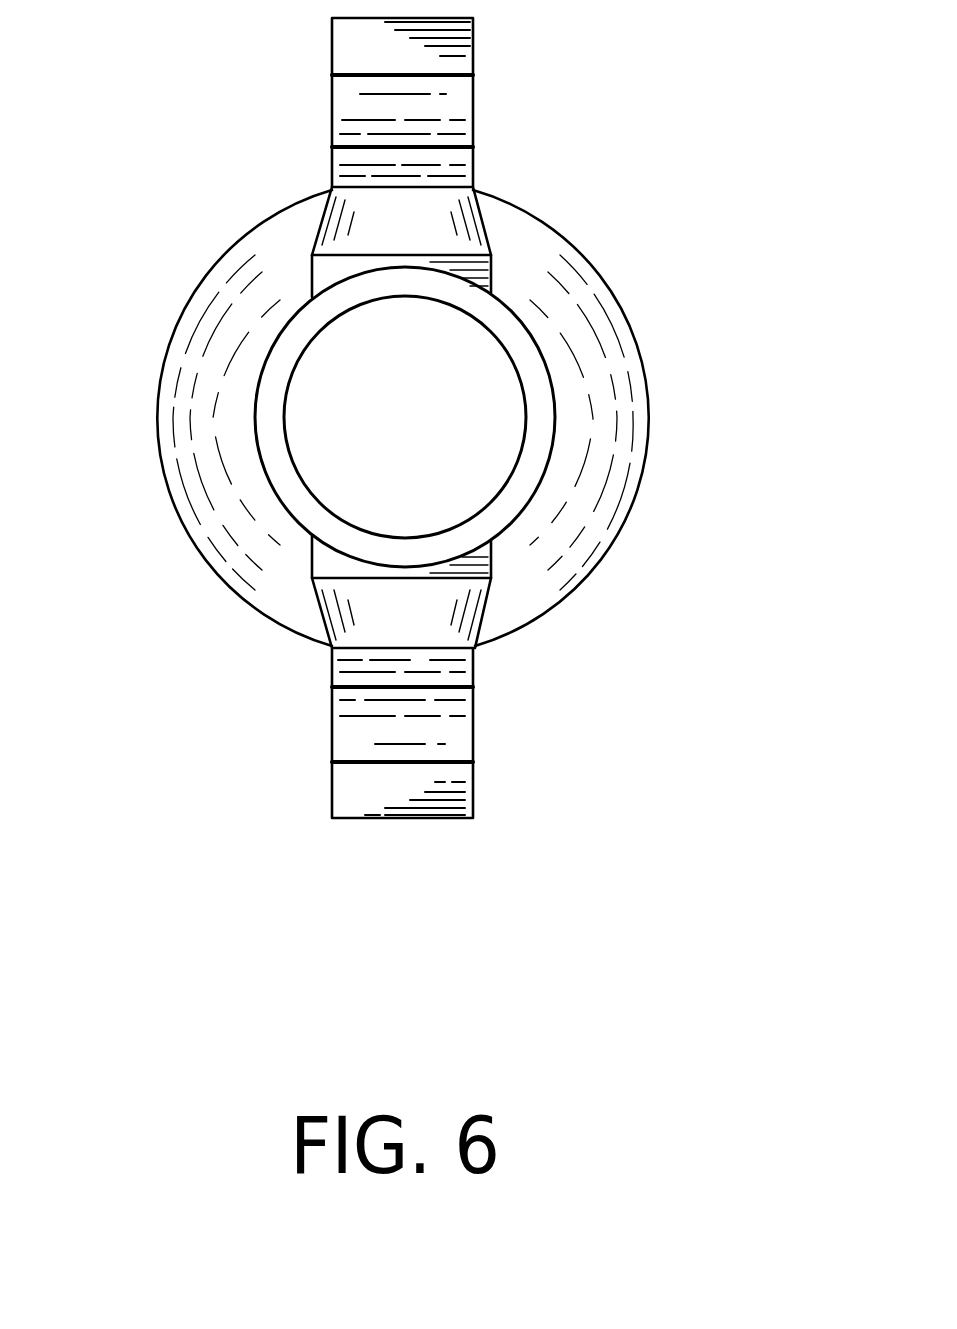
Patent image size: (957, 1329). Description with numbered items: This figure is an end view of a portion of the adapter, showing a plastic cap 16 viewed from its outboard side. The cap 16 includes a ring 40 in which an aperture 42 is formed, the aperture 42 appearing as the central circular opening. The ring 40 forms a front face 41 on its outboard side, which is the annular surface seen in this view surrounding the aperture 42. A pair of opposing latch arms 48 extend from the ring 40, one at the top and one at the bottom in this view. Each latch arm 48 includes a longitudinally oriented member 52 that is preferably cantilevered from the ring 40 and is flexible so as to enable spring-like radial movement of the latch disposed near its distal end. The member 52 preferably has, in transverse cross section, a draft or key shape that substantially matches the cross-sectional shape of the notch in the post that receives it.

The rotary drive assembly 16 is at (765, 685).
The drive disc 40 is at (646, 363).
The bore ring 41 is at (266, 348).
The bore 42 is at (355, 437).
The hub flange 48 is at (489, 241).
The shaft 52 is at (474, 125).